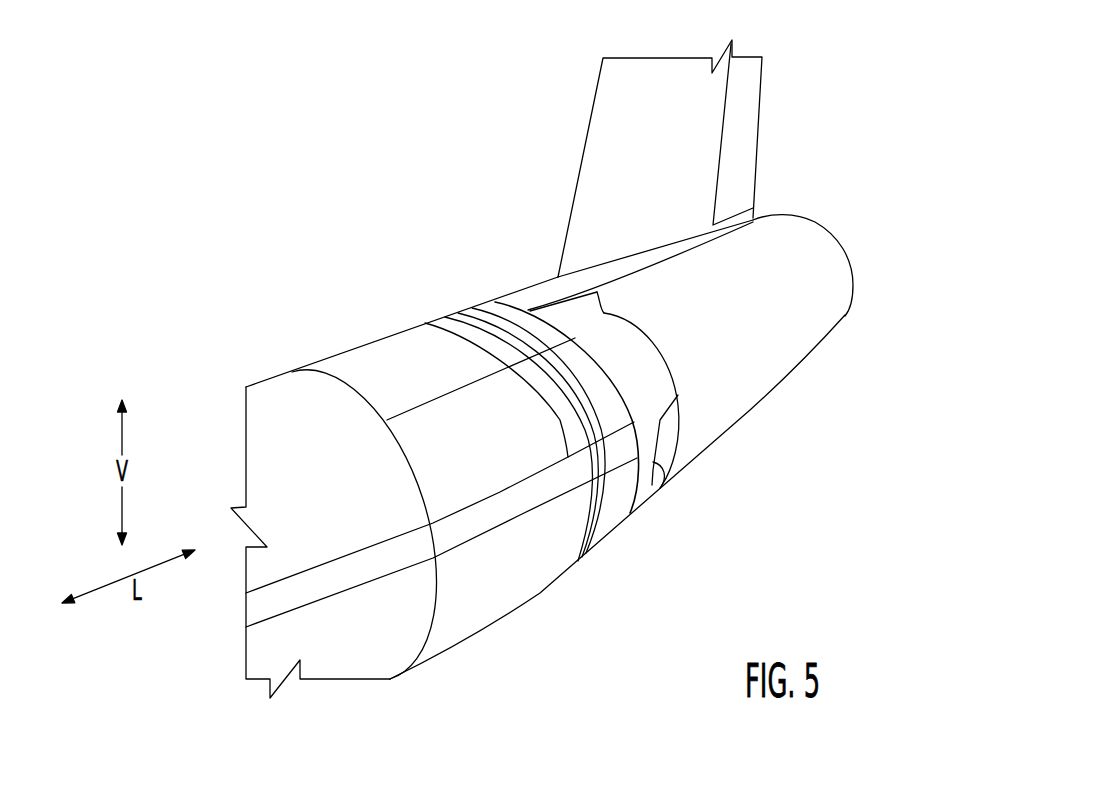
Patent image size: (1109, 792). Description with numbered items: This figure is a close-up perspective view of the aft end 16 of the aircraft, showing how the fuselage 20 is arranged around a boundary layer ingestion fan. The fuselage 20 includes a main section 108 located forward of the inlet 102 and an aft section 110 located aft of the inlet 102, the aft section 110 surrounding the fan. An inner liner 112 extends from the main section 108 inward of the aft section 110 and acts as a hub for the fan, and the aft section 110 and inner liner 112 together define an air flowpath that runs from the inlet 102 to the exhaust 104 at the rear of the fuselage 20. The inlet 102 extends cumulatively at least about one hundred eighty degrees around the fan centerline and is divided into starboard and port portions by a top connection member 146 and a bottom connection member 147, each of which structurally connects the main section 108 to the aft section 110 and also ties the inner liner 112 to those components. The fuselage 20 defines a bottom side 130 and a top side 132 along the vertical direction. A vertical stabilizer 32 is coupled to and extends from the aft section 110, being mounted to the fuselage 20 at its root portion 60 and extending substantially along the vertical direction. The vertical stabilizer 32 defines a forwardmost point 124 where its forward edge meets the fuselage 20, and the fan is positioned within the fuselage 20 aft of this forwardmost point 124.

The aft end 16 is at (872, 375).
The fuselage 20 is at (382, 257).
The vertical stabilizer 32 is at (702, 114).
The root portion 60 is at (649, 238).
The inlet 102 is at (637, 429).
The exhaust 104 is at (864, 268).
The main section 108 is at (354, 362).
The aft section 110 is at (758, 270).
The inner liner 112 is at (633, 370).
The forwardmost point 124 is at (554, 263).
The bottom side 130 is at (578, 617).
The top side 132 is at (461, 259).
The top connection member 146 is at (556, 291).
The bottom connection member 147 is at (653, 484).